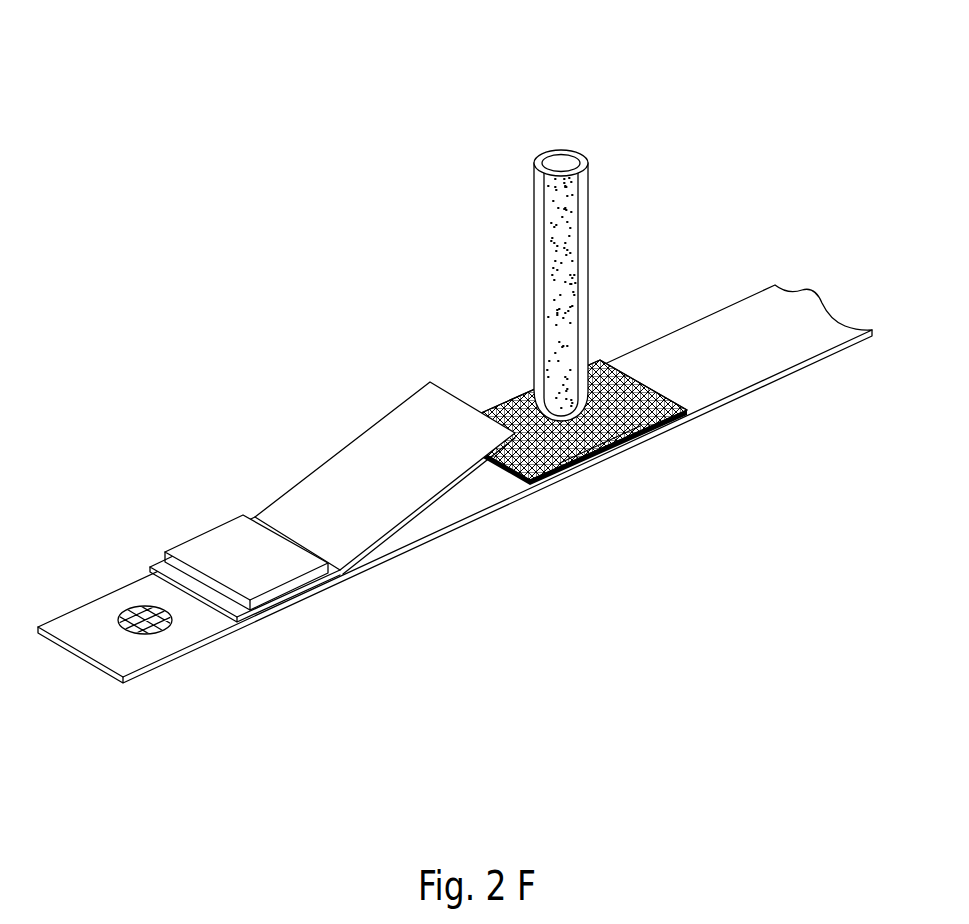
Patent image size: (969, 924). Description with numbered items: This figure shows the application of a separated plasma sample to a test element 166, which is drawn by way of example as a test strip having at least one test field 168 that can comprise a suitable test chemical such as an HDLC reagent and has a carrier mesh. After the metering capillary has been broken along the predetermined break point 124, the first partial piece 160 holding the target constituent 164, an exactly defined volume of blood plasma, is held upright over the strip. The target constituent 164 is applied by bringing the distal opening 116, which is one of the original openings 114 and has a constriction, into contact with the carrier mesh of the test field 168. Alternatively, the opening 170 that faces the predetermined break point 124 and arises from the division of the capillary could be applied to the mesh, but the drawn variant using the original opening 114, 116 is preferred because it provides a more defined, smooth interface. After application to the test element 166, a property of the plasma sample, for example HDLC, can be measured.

The opening 114 is at (631, 513).
The distal opening 116 is at (598, 462).
The predetermined break point 124 is at (583, 152).
The first partial piece 160 is at (555, 225).
The target constituent 164 is at (557, 268).
The test element 166 is at (452, 532).
The test field 168 is at (630, 434).
The opening 170 is at (556, 162).